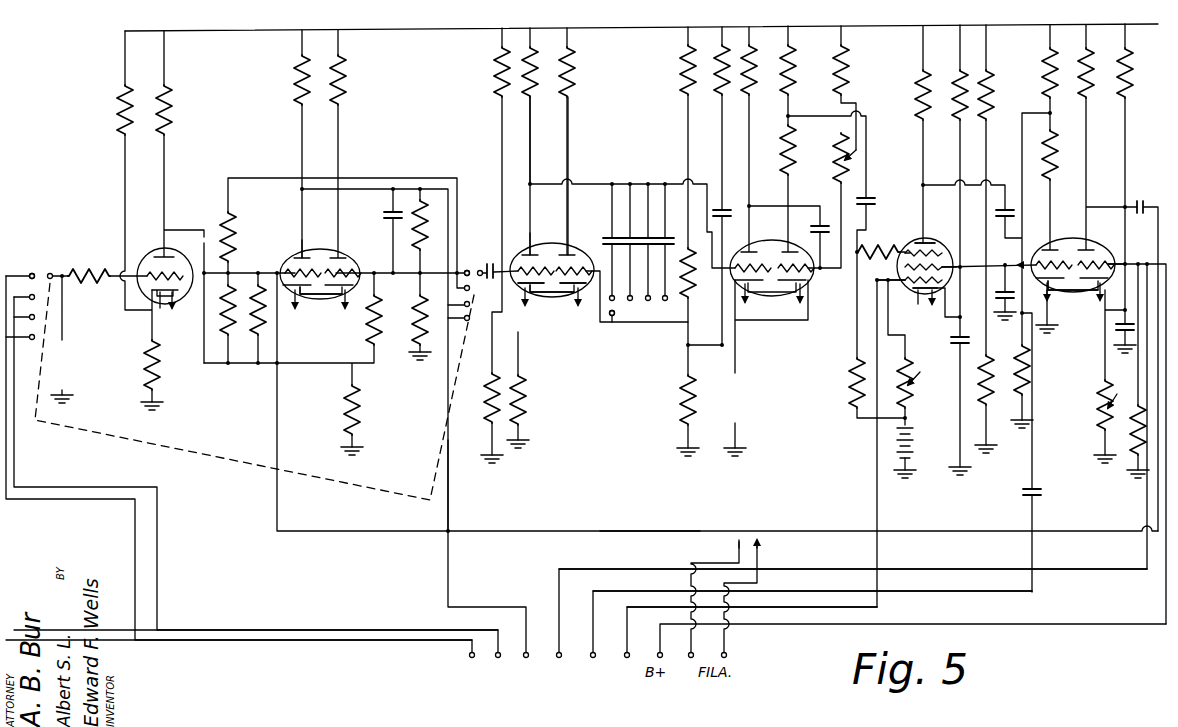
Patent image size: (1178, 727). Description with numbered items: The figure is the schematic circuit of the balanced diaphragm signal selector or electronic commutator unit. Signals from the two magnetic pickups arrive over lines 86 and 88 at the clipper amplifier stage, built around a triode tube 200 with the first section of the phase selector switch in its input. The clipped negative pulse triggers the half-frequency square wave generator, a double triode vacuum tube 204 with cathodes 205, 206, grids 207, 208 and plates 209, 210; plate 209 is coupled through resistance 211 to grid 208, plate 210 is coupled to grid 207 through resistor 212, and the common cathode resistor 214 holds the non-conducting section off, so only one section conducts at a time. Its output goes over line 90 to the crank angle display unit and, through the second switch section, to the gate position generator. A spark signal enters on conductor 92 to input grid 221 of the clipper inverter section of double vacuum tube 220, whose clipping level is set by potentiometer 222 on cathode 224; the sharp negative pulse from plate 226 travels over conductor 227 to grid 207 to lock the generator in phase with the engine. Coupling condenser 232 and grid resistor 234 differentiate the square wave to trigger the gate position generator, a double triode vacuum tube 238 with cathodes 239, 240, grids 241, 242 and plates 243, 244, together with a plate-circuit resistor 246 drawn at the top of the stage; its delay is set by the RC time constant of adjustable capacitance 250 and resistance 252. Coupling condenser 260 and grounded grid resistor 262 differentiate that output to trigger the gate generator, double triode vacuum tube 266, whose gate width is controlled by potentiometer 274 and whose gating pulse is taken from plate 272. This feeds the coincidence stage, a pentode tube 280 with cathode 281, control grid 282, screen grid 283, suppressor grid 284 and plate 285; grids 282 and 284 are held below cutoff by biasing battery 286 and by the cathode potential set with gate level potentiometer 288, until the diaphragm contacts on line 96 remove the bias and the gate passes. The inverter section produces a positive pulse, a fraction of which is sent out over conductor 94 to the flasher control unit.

The line 86 is at (282, 644).
The line 88 is at (214, 628).
The line 90 is at (450, 518).
The conductor 92 is at (556, 620).
The conductor 94 is at (968, 591).
The line 96 is at (880, 597).
The triode tube 200 is at (178, 316).
The double triode vacuum tube 204 is at (306, 246).
The cathode 205 is at (308, 296).
The cathode 206 is at (368, 285).
The grid 207 is at (286, 273).
The grid 208 is at (350, 272).
The plate 209 is at (286, 270).
The plate 210 is at (392, 220).
The resistance 211 is at (430, 238).
The resistor 212 is at (226, 222).
The common cathode resistor 214 is at (358, 404).
The double vacuum tube 220 is at (1070, 244).
The input grid 221 is at (1112, 265).
The potentiometer 222 is at (1103, 412).
The cathode 224 is at (1092, 292).
The plate 226 is at (1140, 214).
The conductor 227 is at (1086, 208).
The coupling condenser 232 is at (490, 262).
The grid resistor 234 is at (490, 420).
The double triode vacuum tube 238 is at (551, 250).
The cathode 239 is at (520, 334).
The cathode 240 is at (560, 296).
The grid 241 is at (532, 285).
The grid 242 is at (570, 286).
The plate 243 is at (528, 248).
The plate 244 is at (584, 248).
The resistor 246 is at (498, 96).
The capacitance 250 is at (636, 182).
The resistance 252 is at (697, 300).
The coupling condenser 260 is at (720, 208).
The grounded grid resistor 262 is at (686, 404).
The double triode vacuum tube 266 is at (752, 294).
The plate 272 is at (812, 224).
The potentiometer 274 is at (836, 152).
The pentode tube 280 is at (910, 242).
The cathode 281 is at (940, 282).
The control grid 282 is at (906, 298).
The screen grid 283 is at (944, 268).
The suppressor grid 284 is at (918, 250).
The plate 285 is at (924, 240).
The biasing battery 286 is at (916, 456).
The adjustable gate level potentiometer 288 is at (914, 376).